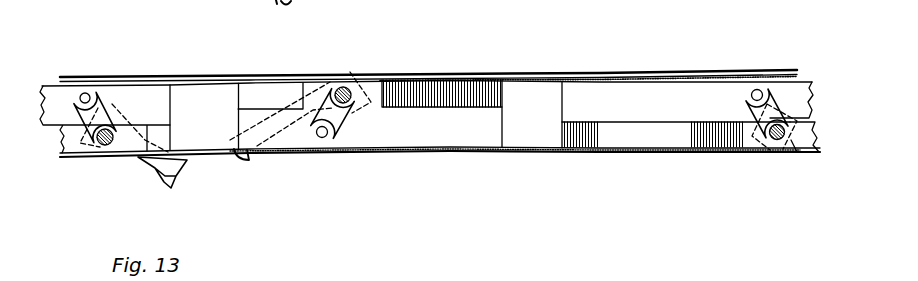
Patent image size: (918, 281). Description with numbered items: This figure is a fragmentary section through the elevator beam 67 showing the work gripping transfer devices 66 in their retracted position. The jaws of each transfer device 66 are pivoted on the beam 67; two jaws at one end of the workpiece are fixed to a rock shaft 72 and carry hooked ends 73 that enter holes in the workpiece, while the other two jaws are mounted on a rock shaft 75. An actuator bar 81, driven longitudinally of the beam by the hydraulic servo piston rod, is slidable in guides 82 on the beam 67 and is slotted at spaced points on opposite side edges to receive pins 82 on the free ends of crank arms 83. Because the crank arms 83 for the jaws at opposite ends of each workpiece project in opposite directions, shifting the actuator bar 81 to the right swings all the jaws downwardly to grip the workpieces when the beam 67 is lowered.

The transfer device 66 is at (139, 158).
The elongated bar or beam 67 is at (642, 156).
The rock shaft 72 is at (104, 147).
The hooked end 73 is at (170, 187).
The rock shaft 75 is at (340, 84).
The actuator bar 81 is at (148, 90).
The pin 82 is at (86, 92).
The crank arm 83 is at (103, 98).